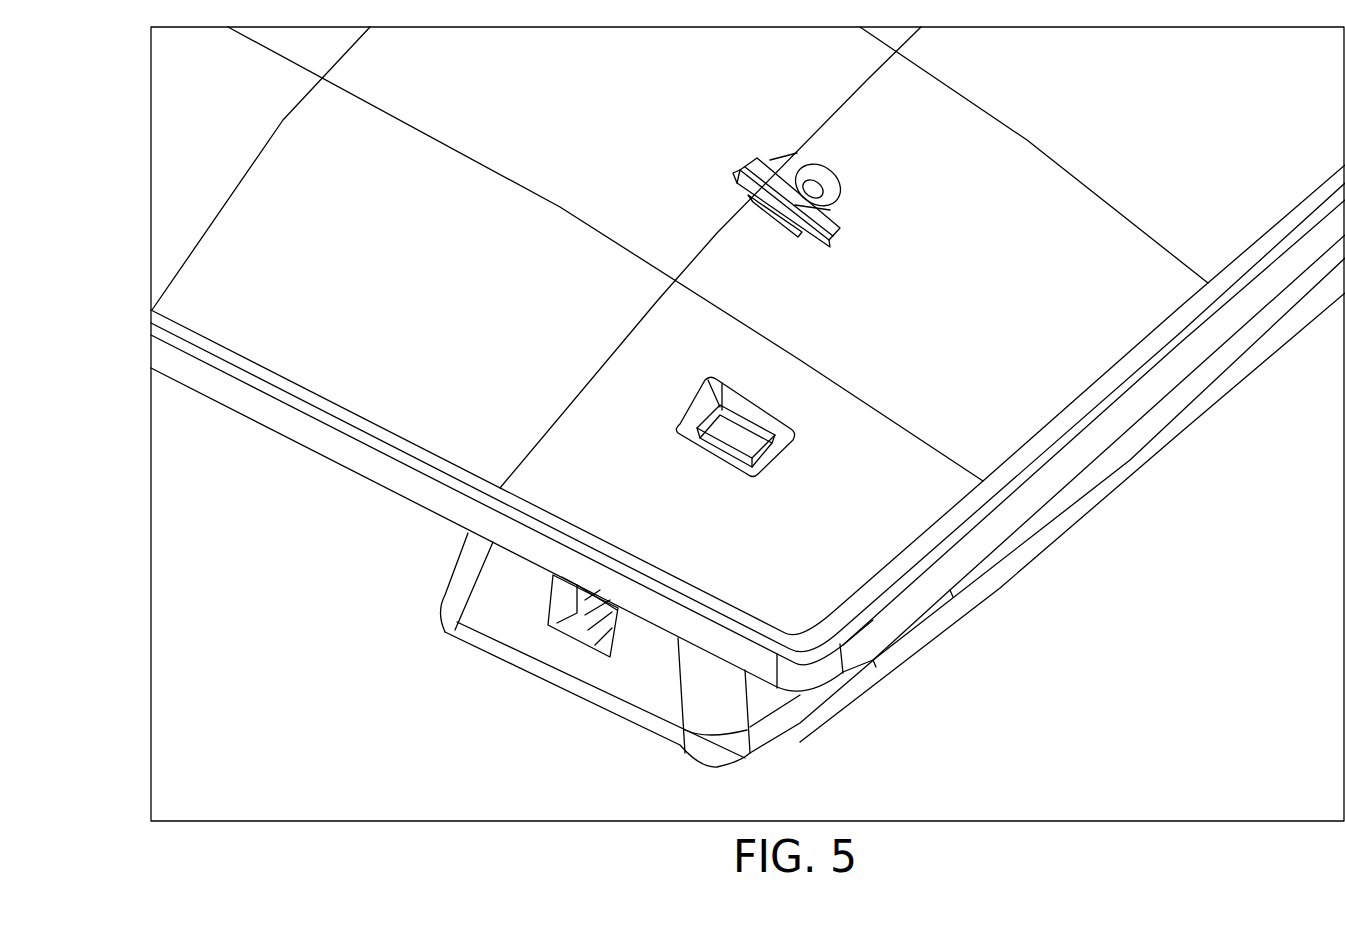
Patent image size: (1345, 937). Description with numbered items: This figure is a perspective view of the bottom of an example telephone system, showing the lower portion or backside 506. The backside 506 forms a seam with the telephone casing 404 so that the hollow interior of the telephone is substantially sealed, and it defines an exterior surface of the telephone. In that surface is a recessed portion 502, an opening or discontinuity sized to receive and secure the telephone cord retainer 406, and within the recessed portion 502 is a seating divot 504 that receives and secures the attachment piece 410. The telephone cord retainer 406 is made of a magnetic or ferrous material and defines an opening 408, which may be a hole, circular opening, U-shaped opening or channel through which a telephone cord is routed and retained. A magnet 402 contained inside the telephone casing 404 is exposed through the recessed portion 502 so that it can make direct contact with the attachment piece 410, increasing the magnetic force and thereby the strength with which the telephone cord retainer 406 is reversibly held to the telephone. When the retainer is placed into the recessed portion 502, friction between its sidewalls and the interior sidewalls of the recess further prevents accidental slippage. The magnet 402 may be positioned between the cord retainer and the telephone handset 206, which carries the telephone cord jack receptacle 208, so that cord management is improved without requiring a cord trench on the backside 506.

The telephone handset 206 is at (457, 596).
The telephone cord jack receptacle 208 is at (553, 627).
The magnet 402 is at (723, 448).
The telephone casing 404 is at (863, 637).
The telephone cord retainer 406 is at (781, 174).
The opening 408 is at (832, 200).
The attachment piece 410 is at (767, 220).
The recessed portion 502 is at (697, 402).
The seating divot 504 is at (743, 427).
The backside 506 is at (1040, 400).